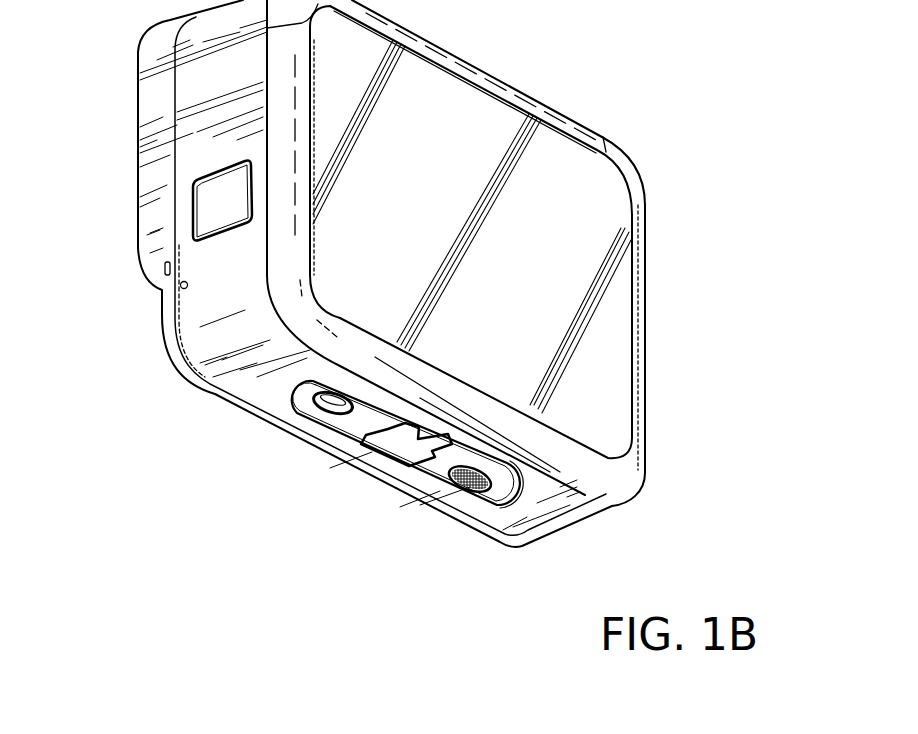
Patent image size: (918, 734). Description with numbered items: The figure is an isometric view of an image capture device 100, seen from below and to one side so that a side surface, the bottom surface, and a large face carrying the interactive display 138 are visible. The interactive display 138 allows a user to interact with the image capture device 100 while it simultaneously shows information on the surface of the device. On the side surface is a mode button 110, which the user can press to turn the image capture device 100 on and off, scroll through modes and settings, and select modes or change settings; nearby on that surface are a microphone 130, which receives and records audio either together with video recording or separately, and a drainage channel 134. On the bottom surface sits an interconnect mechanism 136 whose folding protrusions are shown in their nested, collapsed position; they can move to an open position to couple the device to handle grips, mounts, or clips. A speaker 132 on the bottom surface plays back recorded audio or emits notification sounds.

The image capture device 100 is at (632, 61).
The mode button 110 is at (201, 203).
The microphone 130 is at (182, 288).
The speaker 132 is at (463, 487).
The drainage channel 134 is at (163, 268).
The interconnect mechanism 136 is at (337, 426).
The interactive display 138 is at (607, 354).